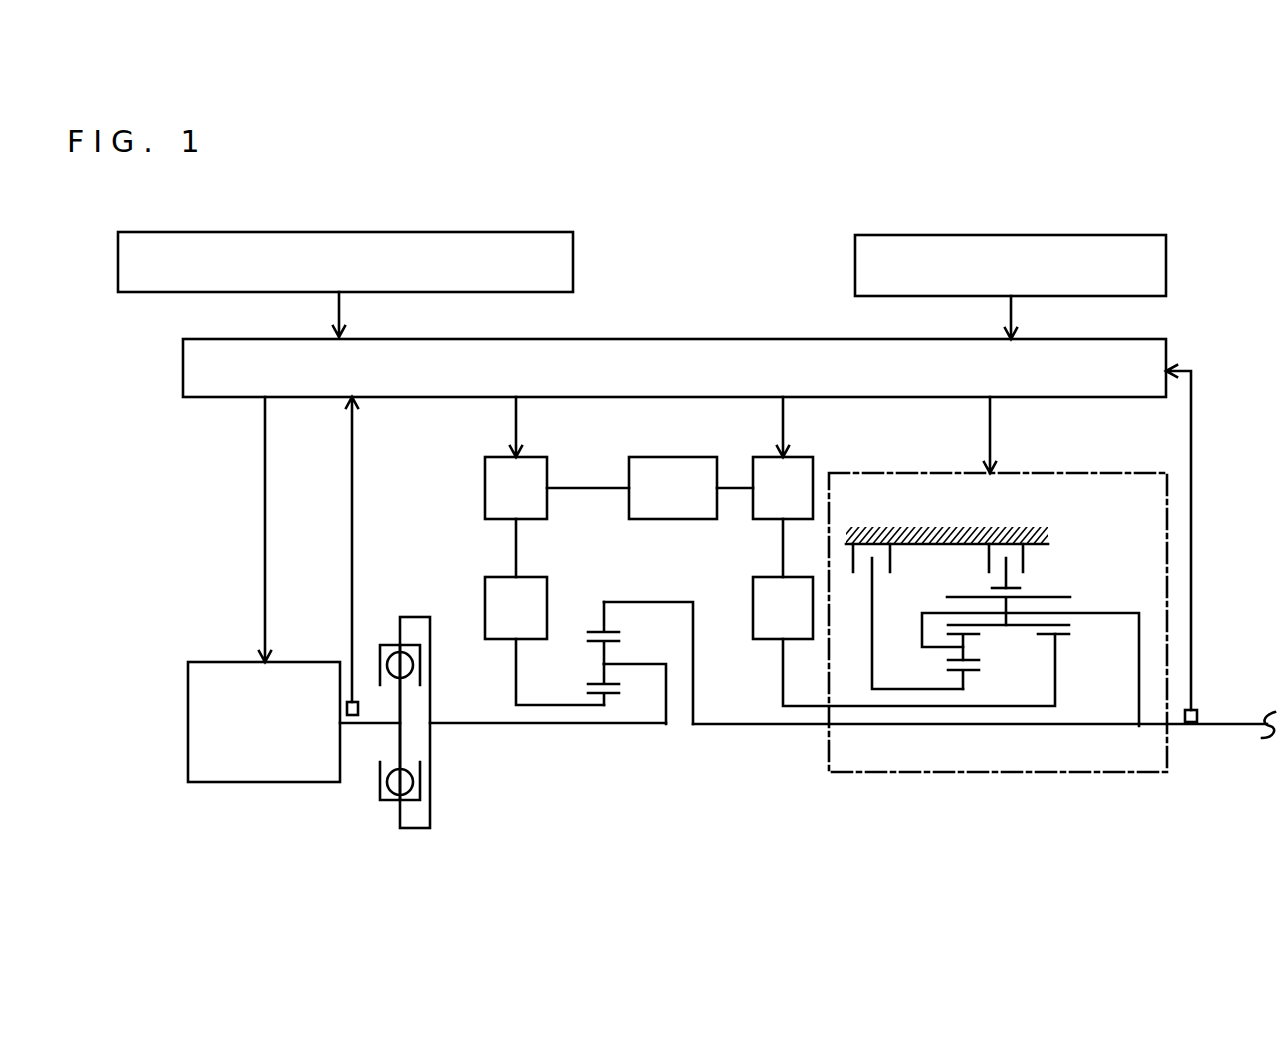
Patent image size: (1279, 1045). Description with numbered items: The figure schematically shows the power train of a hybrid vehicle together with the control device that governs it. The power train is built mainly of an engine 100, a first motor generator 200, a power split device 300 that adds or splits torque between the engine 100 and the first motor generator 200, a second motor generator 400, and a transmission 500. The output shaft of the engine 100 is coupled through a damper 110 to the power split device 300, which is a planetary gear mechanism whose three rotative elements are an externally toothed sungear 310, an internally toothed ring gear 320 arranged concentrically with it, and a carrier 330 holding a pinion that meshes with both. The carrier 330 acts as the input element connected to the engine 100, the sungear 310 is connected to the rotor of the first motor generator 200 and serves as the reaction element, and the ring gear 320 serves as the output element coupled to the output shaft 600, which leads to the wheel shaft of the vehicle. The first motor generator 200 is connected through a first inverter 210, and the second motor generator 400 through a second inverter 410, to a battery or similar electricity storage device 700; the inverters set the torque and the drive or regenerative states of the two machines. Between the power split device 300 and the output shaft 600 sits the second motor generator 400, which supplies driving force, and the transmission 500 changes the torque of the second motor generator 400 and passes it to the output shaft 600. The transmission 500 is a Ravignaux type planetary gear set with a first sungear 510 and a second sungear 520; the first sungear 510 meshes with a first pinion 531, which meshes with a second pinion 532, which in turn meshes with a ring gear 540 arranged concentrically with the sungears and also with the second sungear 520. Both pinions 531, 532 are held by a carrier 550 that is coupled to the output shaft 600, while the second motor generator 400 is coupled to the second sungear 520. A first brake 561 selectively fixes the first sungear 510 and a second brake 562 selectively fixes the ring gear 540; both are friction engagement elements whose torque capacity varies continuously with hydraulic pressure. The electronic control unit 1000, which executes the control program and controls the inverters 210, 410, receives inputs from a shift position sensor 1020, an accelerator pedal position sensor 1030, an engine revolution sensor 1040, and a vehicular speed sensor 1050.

The engine 100 is at (278, 782).
The damper 110 is at (389, 800).
The motor generator (MG) (1) 200 is at (485, 596).
The inverter 210 is at (545, 457).
The power split device 300 is at (604, 685).
The sungear (S) 310 is at (611, 697).
The ring gear (R) 320 is at (596, 630).
The carrier (C) 330 is at (636, 664).
The MG (2) 400 is at (775, 641).
The inverter 410 is at (811, 457).
The transmission 500 is at (975, 620).
The first sungear (S1) 510 is at (974, 680).
The second sungear (S2) 520 is at (1060, 640).
The first pinion 531 is at (978, 662).
The second pinion 532 is at (970, 597).
The ring gear (R) 540 is at (1020, 588).
The carrier (C) 550 is at (1103, 613).
The B1 brake 561 is at (882, 548).
The B2 brake 562 is at (1018, 548).
The output shaft 600 is at (1215, 728).
The electricity storage device 700 is at (666, 457).
The electronic control unit (ECU) 1000 is at (667, 339).
The shift position sensor 1020 is at (1116, 235).
The accelerator pedal position sensor 1030 is at (448, 232).
The engine revolution sensor 1040 is at (347, 708).
The vehicular speed sensor 1050 is at (1197, 710).